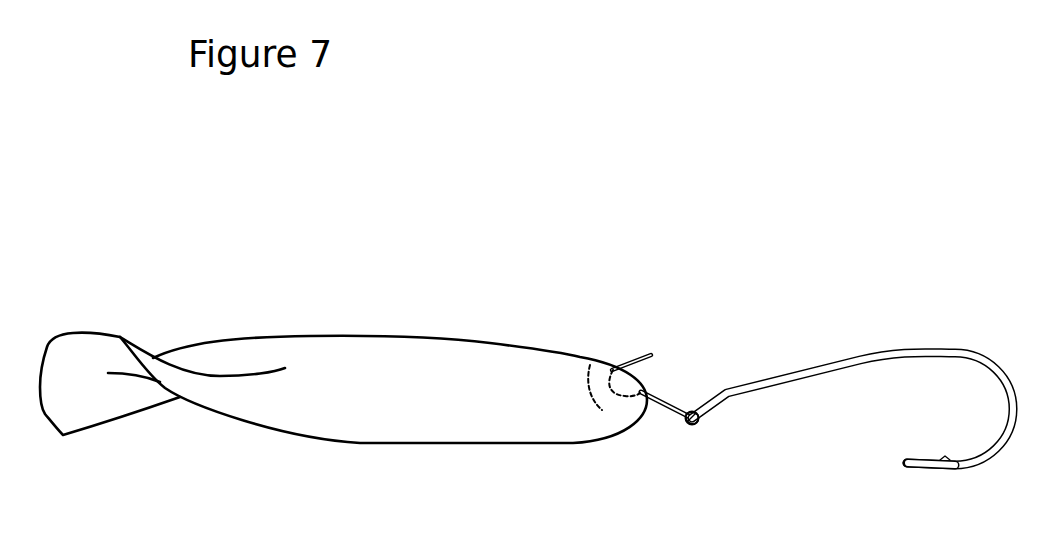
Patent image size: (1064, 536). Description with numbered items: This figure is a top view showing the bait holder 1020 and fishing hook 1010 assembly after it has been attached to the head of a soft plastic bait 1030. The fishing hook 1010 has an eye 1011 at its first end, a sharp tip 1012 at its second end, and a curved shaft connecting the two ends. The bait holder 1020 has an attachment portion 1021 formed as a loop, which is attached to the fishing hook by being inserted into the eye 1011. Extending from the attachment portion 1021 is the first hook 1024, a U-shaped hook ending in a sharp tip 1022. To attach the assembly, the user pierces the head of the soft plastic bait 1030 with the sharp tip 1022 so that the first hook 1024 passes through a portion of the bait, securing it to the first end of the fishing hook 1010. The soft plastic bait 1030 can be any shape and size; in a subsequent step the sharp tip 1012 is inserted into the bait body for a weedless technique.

The fishing hook 1010 is at (880, 353).
The eye 1011 is at (697, 421).
The sharp tip 1012 is at (927, 458).
The bait holder 1020 is at (660, 383).
The attachment portion 1021 is at (684, 424).
The sharp tip 1022 is at (652, 355).
The first hook 1024 is at (571, 387).
The soft plastic bait 1030 is at (378, 333).